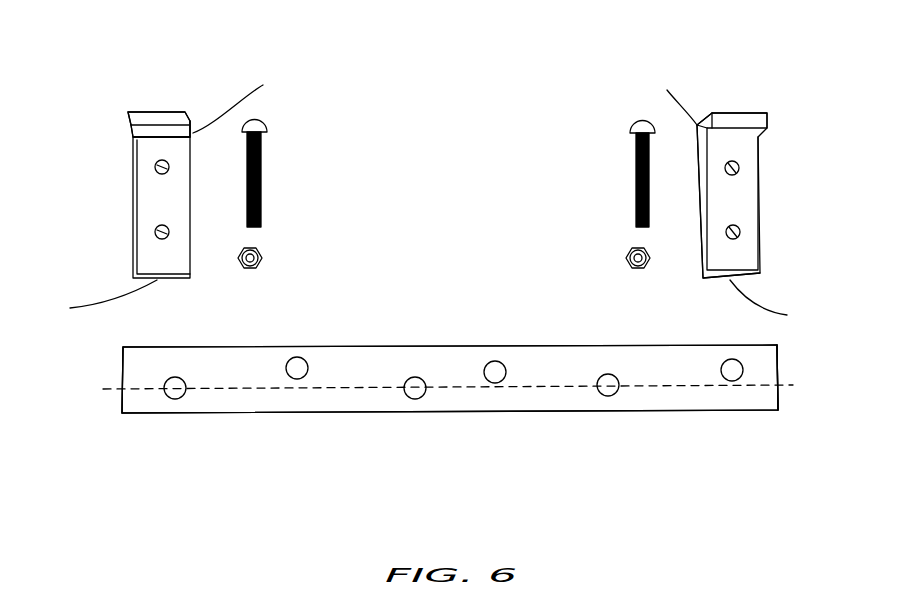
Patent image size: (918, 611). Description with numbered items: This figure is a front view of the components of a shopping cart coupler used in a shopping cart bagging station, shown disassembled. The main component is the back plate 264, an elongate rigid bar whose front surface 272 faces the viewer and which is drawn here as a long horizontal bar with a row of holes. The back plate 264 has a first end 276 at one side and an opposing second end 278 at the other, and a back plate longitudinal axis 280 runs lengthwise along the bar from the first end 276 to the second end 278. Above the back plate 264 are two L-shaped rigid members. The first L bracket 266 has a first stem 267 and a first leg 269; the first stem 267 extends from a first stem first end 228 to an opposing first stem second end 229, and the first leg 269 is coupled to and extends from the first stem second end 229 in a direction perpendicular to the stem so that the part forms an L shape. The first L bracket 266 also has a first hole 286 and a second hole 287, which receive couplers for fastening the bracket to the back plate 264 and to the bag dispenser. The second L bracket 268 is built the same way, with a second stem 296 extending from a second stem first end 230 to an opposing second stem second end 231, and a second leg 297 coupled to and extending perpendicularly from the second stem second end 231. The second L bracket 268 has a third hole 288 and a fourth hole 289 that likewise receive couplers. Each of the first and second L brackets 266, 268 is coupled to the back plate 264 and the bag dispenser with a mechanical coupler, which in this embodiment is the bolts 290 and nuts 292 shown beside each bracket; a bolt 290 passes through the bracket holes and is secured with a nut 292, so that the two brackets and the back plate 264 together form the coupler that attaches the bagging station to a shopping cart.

The first L bracket 266 is at (131, 153).
The first leg 269 is at (170, 112).
The first stem 267 is at (137, 203).
The second hole 287 is at (155, 167).
The first hole 286 is at (155, 233).
The first stem second end 229 is at (267, 99).
The first stem first end 228 is at (93, 299).
The bolt 290 is at (262, 170).
The nut 292 is at (263, 258).
The second L bracket 268 is at (791, 170).
The second leg 297 is at (728, 118).
The second stem 296 is at (747, 203).
The fourth hole 289 is at (740, 168).
The third hole 288 is at (741, 233).
The second stem second end 231 is at (671, 96).
The second stem first end 230 is at (777, 304).
The front surface 272 is at (480, 417).
The back plate 264 is at (668, 398).
The first end 276 is at (144, 437).
The second end 278 is at (751, 440).
The back plate longitudinal axis 280 is at (788, 385).